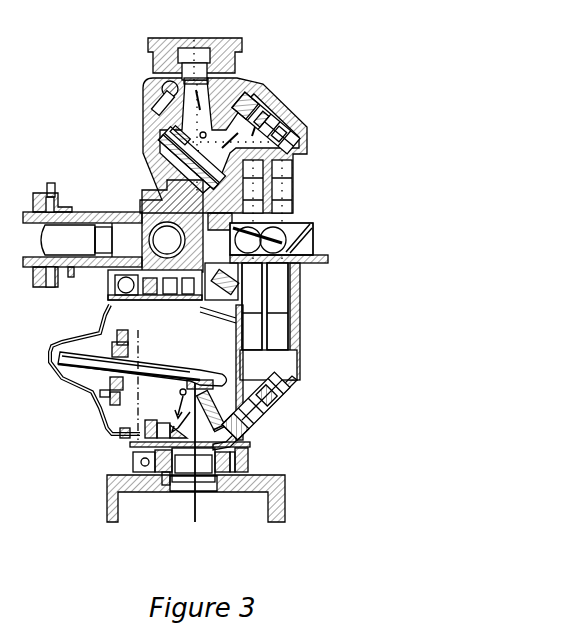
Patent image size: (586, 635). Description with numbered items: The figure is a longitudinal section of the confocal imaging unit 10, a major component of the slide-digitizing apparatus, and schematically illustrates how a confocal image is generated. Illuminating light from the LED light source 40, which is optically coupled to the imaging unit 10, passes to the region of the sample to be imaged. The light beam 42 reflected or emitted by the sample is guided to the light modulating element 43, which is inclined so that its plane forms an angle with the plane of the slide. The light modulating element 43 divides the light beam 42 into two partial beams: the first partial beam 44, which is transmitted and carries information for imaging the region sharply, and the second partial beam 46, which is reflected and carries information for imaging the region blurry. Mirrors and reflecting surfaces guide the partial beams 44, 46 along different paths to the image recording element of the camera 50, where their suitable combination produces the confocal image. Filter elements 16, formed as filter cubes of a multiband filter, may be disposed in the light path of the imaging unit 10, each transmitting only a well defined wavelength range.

The confocal imaging unit 10 is at (445, 63).
The filter element 16 is at (318, 230).
The light source 40 is at (65, 195).
The light beam 42 is at (198, 508).
The light modulating element 43 is at (270, 410).
The first partial beam 44 is at (283, 332).
The second partial beam 46 is at (256, 303).
The camera 50 is at (150, 52).